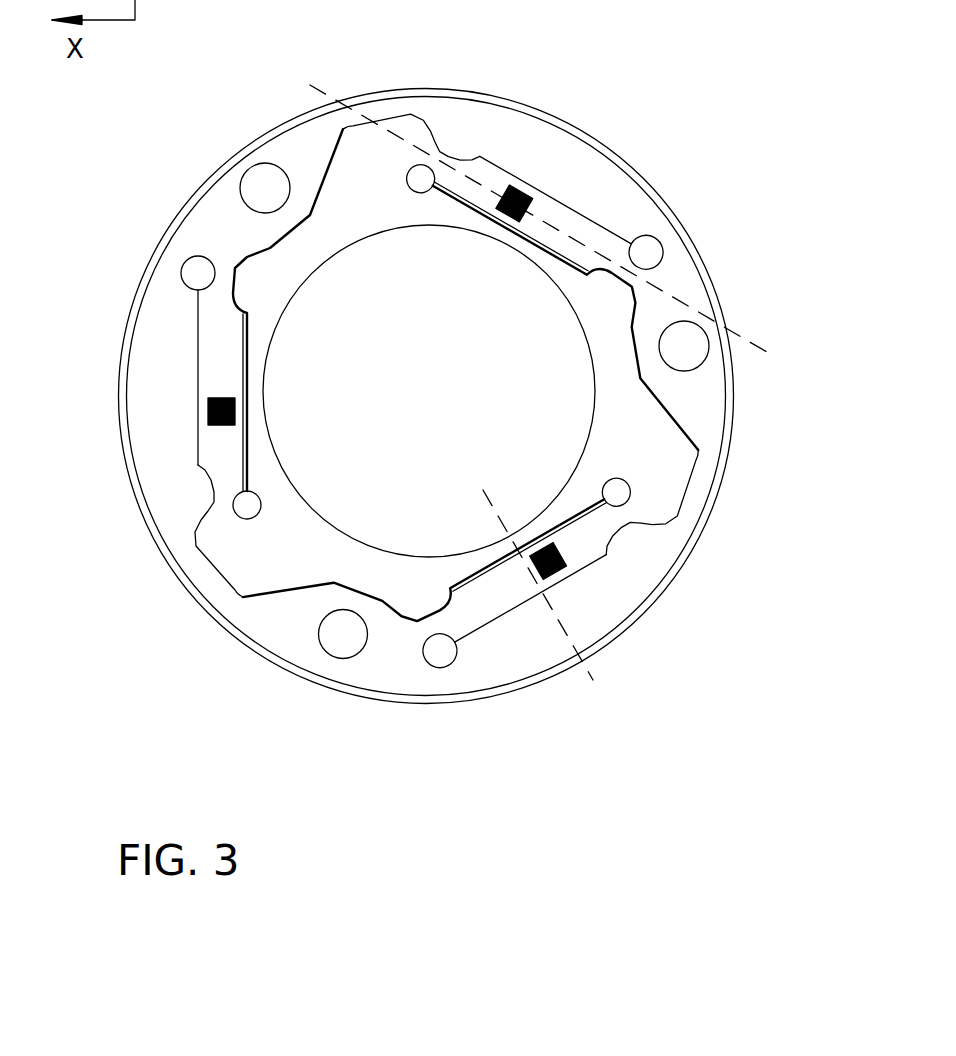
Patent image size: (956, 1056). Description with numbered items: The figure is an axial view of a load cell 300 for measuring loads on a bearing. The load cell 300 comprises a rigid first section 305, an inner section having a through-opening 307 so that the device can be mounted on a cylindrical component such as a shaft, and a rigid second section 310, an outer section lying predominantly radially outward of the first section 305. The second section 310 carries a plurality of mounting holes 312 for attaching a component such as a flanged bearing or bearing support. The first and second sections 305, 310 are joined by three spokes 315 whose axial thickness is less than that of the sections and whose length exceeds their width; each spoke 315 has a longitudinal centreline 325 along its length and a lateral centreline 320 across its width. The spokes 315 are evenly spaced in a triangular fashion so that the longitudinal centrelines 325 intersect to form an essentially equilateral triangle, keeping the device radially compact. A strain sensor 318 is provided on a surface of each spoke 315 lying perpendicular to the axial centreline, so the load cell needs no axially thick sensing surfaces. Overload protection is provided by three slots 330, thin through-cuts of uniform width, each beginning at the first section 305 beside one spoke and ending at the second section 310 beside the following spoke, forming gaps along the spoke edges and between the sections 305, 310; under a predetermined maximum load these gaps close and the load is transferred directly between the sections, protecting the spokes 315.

The load cell 300 is at (675, 148).
The rigid first section 305 is at (328, 561).
The through-opening 307 is at (568, 432).
The rigid second section 310 is at (414, 676).
The mounting holes 312 is at (262, 188).
The spokes 315 is at (213, 358).
The strain sensor 318 is at (527, 195).
The lateral centreline 320 is at (555, 618).
The longitudinal centreline 325 is at (433, 148).
The slots 330 is at (528, 233).